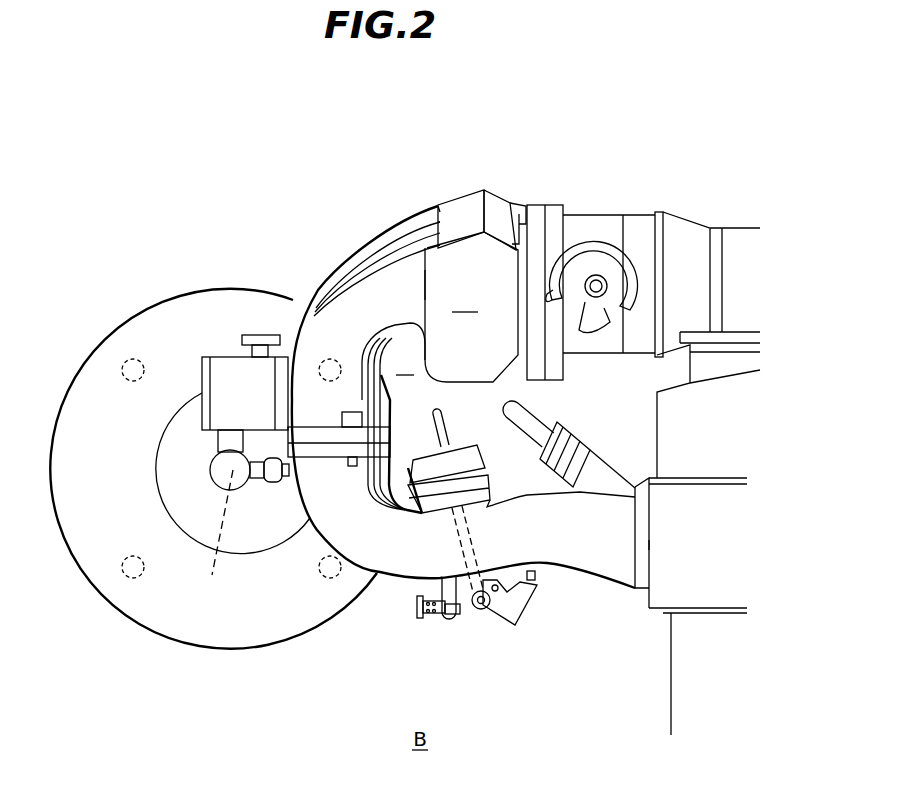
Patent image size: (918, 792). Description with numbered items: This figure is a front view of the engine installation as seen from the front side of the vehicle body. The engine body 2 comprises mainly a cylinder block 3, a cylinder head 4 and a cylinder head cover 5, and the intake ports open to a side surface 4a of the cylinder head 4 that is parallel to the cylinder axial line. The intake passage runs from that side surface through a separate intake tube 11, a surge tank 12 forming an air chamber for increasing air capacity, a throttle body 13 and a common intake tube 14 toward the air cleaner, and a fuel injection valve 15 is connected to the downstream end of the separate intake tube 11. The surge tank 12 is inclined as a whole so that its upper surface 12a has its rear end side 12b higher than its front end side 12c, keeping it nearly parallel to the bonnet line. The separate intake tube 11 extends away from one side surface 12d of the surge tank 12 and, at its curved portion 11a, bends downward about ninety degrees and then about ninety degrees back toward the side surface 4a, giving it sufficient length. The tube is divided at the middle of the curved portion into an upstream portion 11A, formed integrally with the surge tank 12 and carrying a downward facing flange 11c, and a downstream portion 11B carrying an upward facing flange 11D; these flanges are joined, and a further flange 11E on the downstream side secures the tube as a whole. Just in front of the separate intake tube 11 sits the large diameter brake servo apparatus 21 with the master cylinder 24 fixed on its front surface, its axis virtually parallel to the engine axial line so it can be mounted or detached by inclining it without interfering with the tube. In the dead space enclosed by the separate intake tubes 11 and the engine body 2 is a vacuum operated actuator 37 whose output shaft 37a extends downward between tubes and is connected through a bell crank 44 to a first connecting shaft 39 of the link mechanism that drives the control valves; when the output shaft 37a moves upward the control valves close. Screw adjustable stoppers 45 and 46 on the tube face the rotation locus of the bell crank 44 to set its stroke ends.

The engine body 2 is at (637, 680).
The cylinder block 3 is at (687, 692).
The cylinder head 4 is at (648, 612).
The side surface 4a is at (648, 545).
The cylinder head cover 5 is at (657, 410).
The separate intake tube 11 is at (477, 434).
The upstream portion 11A is at (366, 233).
The downstream portion 11B is at (390, 578).
The curved portion 11a is at (317, 528).
The flange 11c is at (305, 432).
The flange 11D is at (312, 458).
The flange 11E is at (641, 510).
The surge tank 12 is at (457, 307).
The upper surface 12a is at (472, 203).
The rear end side 12b is at (495, 190).
The front end side 12c is at (484, 252).
The side surface 12d is at (425, 283).
The throttle body 13 is at (594, 215).
The common intake tube 14 is at (729, 237).
The fuel injection valve 15 is at (550, 470).
The servo apparatus 21 is at (222, 638).
The master cylinder 24 is at (217, 470).
The actuator 37 is at (453, 458).
The output shaft 37a is at (477, 548).
The first connecting shaft 39 is at (488, 602).
The bell crank 44 is at (513, 600).
The stopper 45 is at (533, 577).
The stopper 46 is at (458, 612).